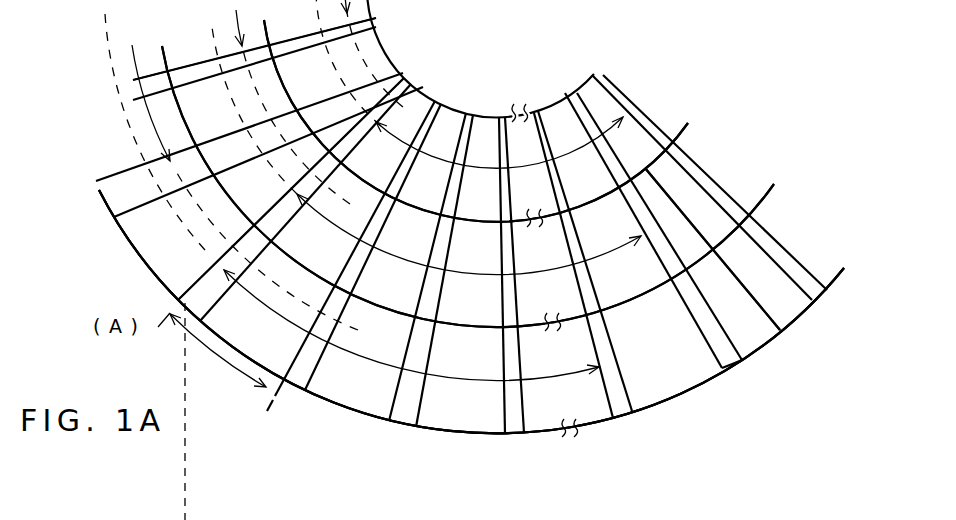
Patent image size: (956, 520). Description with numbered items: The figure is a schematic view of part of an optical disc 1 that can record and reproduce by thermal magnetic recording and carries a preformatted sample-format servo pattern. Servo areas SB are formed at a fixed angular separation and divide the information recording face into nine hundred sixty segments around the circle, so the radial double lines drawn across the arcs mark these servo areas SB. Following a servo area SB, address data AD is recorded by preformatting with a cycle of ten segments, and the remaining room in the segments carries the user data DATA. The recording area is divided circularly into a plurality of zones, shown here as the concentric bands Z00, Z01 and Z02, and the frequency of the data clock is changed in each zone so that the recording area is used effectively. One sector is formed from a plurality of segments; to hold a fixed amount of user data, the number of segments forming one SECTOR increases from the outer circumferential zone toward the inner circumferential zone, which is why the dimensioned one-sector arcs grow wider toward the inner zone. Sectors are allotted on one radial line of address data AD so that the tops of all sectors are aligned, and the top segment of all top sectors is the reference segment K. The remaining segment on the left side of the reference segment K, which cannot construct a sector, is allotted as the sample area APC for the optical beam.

The optical disc 1 is at (818, 494).
The sample area APC is at (378, 44).
The servo area SB is at (200, 281).
The address data AD is at (255, 314).
The user data DATA is at (688, 386).
The reference segment K is at (222, 345).
The zone Z00 is at (812, 247).
The zone Z01 is at (738, 187).
The zone Z02 is at (648, 113).
The sector SECTOR is at (477, 165).